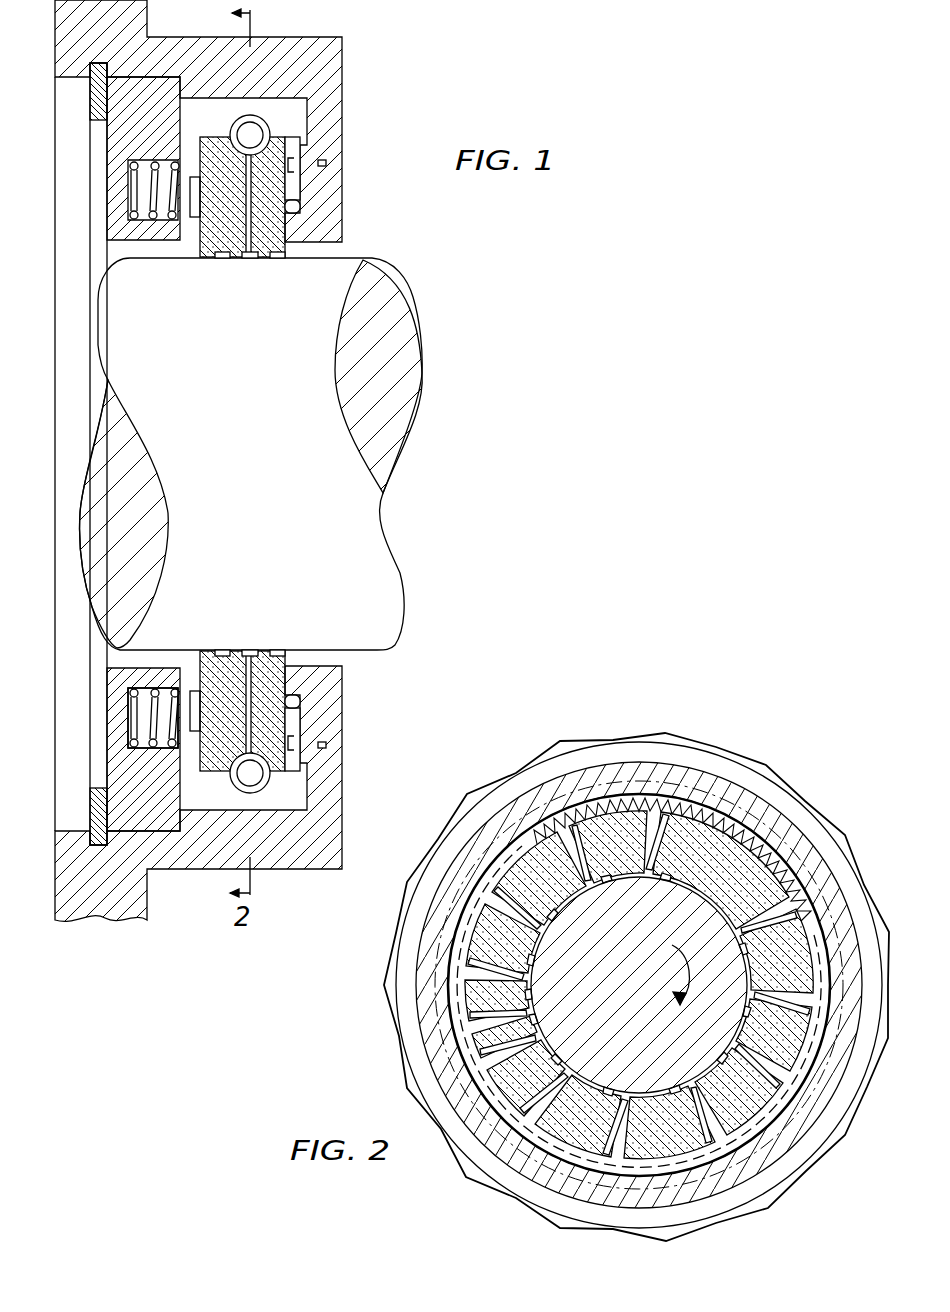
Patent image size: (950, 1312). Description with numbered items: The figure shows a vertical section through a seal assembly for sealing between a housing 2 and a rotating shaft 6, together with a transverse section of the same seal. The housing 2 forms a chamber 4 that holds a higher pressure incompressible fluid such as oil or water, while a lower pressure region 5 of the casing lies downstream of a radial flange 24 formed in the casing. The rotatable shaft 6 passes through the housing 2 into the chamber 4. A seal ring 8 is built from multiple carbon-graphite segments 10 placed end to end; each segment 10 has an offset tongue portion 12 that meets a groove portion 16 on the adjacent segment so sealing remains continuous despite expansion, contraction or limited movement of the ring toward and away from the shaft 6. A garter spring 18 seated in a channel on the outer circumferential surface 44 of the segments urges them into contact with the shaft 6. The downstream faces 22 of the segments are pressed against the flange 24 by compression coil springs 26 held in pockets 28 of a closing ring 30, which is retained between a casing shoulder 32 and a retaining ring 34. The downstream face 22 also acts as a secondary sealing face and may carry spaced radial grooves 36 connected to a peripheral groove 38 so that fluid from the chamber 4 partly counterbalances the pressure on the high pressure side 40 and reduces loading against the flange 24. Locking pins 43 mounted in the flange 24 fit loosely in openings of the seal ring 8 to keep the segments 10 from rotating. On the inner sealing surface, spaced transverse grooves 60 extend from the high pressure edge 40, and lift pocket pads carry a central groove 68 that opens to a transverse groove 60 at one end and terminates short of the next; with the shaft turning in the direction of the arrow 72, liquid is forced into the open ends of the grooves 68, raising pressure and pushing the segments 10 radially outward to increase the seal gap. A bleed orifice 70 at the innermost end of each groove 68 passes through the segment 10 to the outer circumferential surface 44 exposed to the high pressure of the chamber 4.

In FIG. 1, the housing 2 is at (360, 70).
In FIG. 2, the housing 2 is at (872, 950).
In FIG. 1, the chamber 4 is at (222, 97).
In FIG. 1, the region 5 is at (325, 252).
In FIG. 1, the rotatable shaft 6 is at (360, 568).
In FIG. 2, the rotatable shaft 6 is at (650, 992).
In FIG. 1, the seal ring 8 is at (290, 445).
In FIG. 2, the seal ring 8 is at (632, 985).
In FIG. 2, the segments 10 is at (609, 972).
In FIG. 2, the offset tongue portion 12 is at (600, 880).
In FIG. 2, the groove portion 16 is at (651, 878).
In FIG. 1, the garter spring 18 is at (270, 122).
In FIG. 2, the garter spring 18 is at (770, 792).
In FIG. 1, the downstream face 22 is at (300, 228).
In FIG. 1, the radial flange 24 is at (320, 192).
In FIG. 1, the compression coil springs 26 is at (150, 190).
In FIG. 1, the pockets 28 is at (140, 706).
In FIG. 1, the closing ring 30 is at (145, 815).
In FIG. 1, the casing shoulder 32 is at (180, 818).
In FIG. 1, the retaining ring 34 is at (90, 805).
In FIG. 1, the radial grooves 36 is at (303, 152).
In FIG. 1, the peripheral groove 38 is at (300, 207).
In FIG. 1, the high pressure side 40 is at (195, 230).
In FIG. 1, the locking pins 43 is at (326, 163).
In FIG. 1, the outer circumferential surface 44 is at (221, 788).
In FIG. 2, the outer circumferential surface 44 is at (735, 1130).
In FIG. 2, the transverse grooves 60 is at (580, 955).
In FIG. 1, the central groove 68 is at (250, 258).
In FIG. 2, the central groove 68 is at (600, 885).
In FIG. 1, the bleed orifice 70 is at (275, 258).
In FIG. 2, the bleed orifice 70 is at (715, 840).
In FIG. 2, the arrow 72 is at (668, 936).